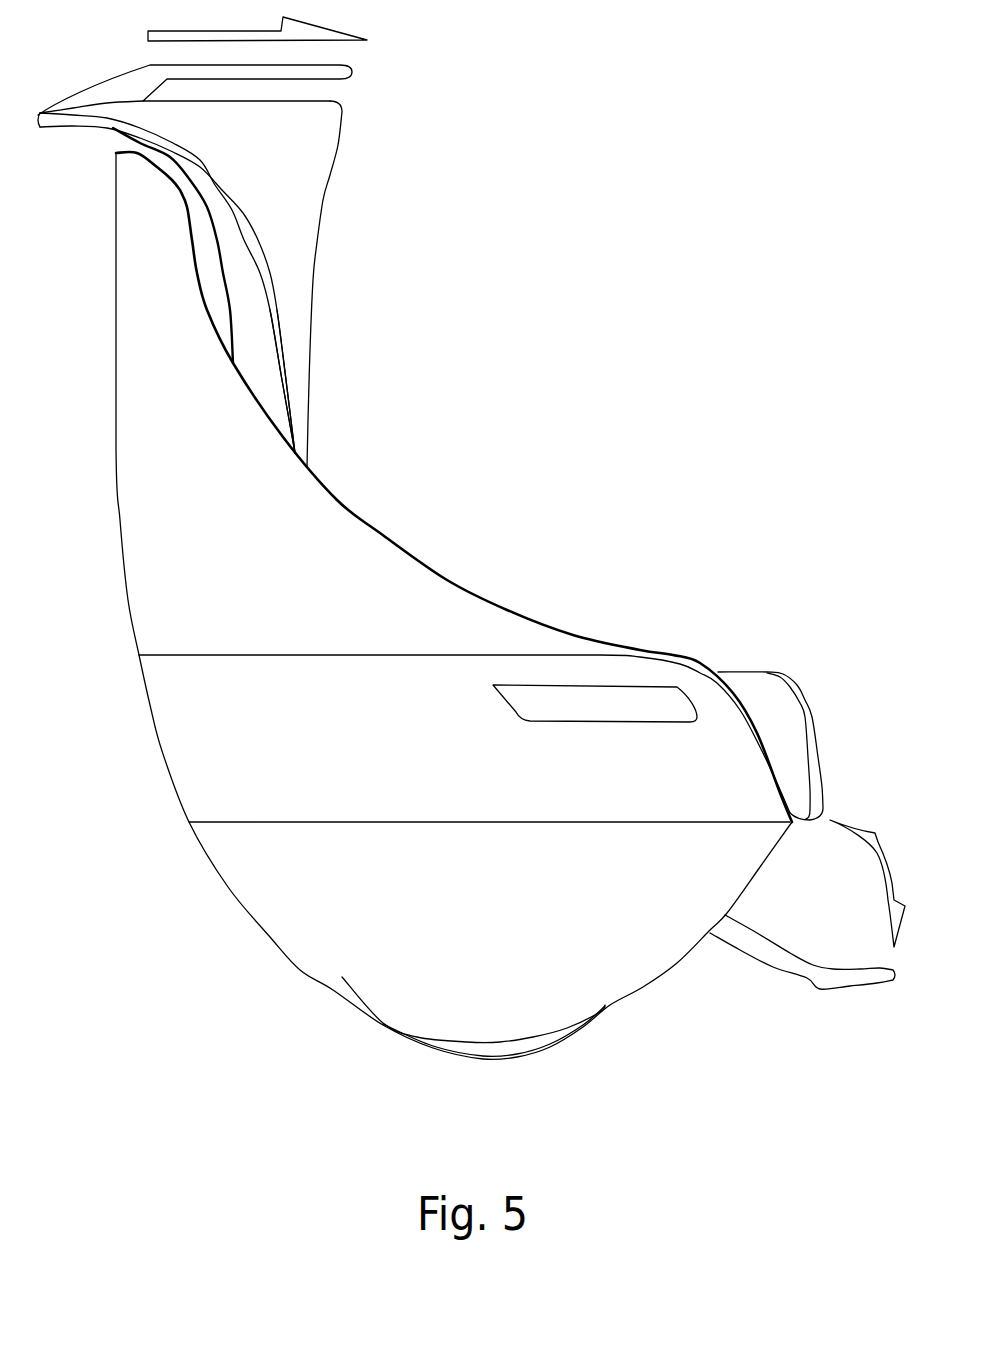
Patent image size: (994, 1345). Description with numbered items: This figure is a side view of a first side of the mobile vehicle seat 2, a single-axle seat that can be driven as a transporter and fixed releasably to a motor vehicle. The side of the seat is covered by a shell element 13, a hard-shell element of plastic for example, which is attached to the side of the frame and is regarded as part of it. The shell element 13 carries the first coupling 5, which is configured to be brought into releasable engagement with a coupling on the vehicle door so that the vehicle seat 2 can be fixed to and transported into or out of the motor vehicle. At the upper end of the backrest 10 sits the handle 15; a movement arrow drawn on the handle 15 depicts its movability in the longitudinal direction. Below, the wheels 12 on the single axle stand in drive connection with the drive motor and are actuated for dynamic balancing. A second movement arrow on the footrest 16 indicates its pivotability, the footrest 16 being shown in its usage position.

The mobile vehicle seat 2 is at (683, 457).
The first coupling 5 is at (647, 703).
The backrest 10 is at (303, 320).
The wheels 12 is at (505, 1047).
The shell element 13 is at (358, 567).
The handle 15 is at (352, 72).
The footrest 16 is at (848, 978).